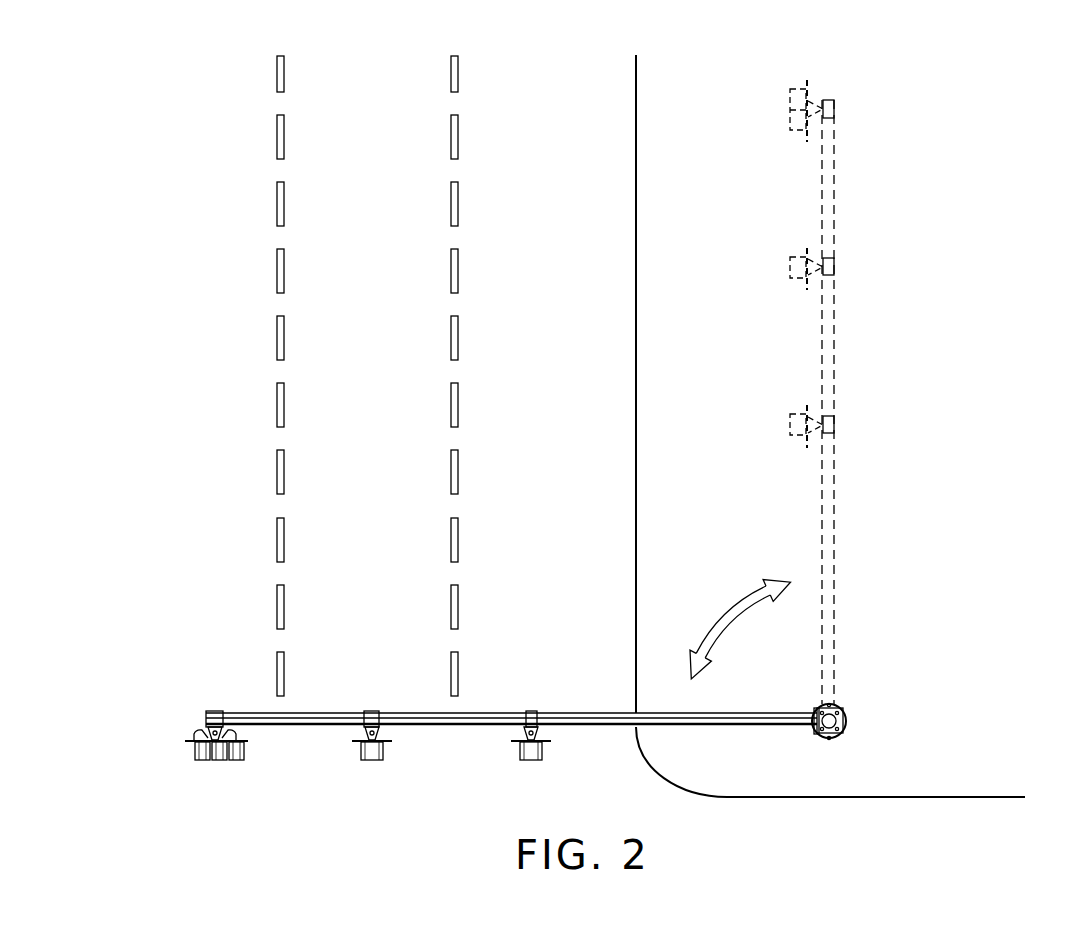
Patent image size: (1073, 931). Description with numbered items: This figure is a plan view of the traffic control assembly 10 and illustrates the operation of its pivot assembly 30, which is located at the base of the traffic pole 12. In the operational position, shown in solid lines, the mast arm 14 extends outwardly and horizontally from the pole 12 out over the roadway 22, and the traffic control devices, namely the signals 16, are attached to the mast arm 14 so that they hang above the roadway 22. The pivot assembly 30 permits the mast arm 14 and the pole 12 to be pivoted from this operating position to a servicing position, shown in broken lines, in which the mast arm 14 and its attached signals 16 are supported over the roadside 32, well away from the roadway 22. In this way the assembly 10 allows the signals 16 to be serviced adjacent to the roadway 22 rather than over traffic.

The traffic control assembly 10 is at (866, 692).
The traffic pole 12 is at (852, 728).
The mast arm 14 is at (302, 713).
The signals 16 is at (531, 762).
The roadway 22 is at (379, 479).
The pivot assembly 30 is at (852, 710).
The roadside 32 is at (746, 534).